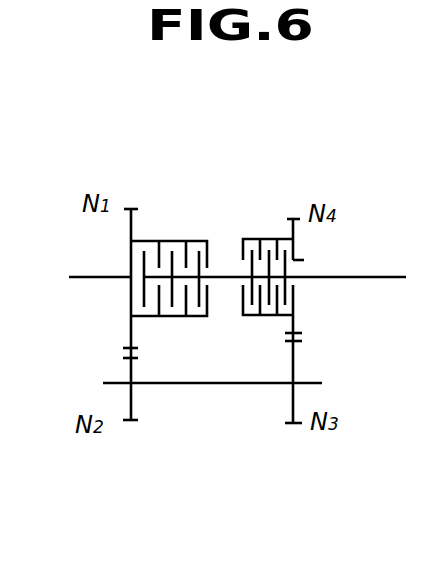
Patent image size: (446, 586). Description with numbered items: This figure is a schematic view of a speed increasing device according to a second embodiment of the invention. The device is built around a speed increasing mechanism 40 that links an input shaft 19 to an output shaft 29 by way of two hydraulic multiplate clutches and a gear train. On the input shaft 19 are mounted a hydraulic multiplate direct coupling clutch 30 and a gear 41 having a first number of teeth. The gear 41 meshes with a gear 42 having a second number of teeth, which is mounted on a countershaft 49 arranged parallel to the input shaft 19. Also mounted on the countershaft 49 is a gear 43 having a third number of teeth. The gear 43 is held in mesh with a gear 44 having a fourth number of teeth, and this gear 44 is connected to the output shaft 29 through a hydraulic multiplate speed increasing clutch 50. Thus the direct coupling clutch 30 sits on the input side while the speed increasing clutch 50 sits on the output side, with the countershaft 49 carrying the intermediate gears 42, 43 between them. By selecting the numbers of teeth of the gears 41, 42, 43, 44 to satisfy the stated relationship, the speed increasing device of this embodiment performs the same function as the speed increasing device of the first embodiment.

The input shaft 19 is at (78, 275).
The output shaft 29 is at (367, 275).
The hydraulic multiplate direct coupling clutch 30 is at (167, 218).
The hydraulic multiplate speed increasing clutch 50 is at (260, 211).
The gear 41 is at (131, 208).
The gear 44 is at (293, 218).
The countershaft 49 is at (233, 387).
The gear 42 is at (130, 422).
The gear 43 is at (293, 425).
The speed increasing mechanism 40 is at (186, 434).